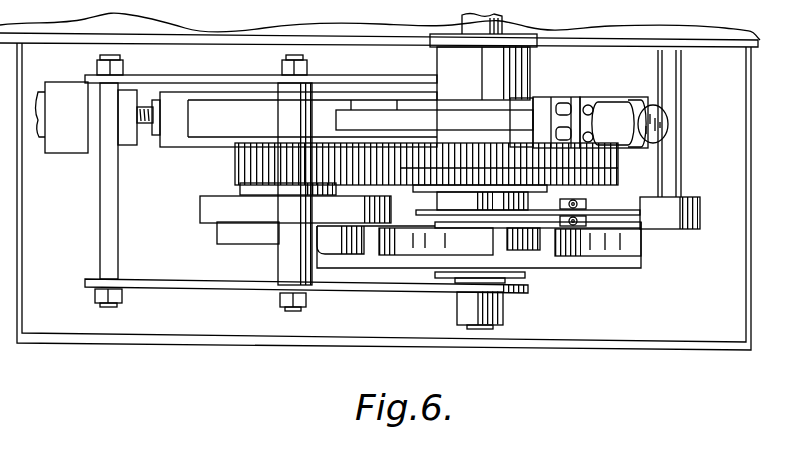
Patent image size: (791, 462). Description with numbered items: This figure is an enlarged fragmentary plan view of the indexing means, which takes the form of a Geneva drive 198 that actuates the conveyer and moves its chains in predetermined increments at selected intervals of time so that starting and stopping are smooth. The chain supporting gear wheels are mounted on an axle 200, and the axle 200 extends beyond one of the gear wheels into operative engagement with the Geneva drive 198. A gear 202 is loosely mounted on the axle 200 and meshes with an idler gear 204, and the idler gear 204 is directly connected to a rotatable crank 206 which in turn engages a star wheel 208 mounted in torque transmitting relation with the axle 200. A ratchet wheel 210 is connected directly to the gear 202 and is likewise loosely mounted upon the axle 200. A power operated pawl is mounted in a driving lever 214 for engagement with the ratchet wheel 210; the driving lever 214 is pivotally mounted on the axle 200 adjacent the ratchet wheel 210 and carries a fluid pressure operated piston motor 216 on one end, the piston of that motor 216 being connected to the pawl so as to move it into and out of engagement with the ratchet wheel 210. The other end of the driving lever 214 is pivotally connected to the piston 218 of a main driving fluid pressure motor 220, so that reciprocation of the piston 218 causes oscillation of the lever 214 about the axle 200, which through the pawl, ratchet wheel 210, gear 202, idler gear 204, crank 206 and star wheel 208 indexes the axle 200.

The Geneva drive 198 is at (607, 28).
The axle 200 is at (503, 22).
The gear 202 is at (610, 172).
The idler gear 204 is at (250, 157).
The rotatable crank 206 is at (212, 210).
The star wheel 208 is at (611, 262).
The ratchet wheel 210 is at (521, 104).
The driving lever 214 is at (362, 115).
The fluid pressure operated piston motor 216 is at (624, 110).
The piston 218 is at (176, 124).
The main driving fluid pressure motor 220 is at (73, 142).